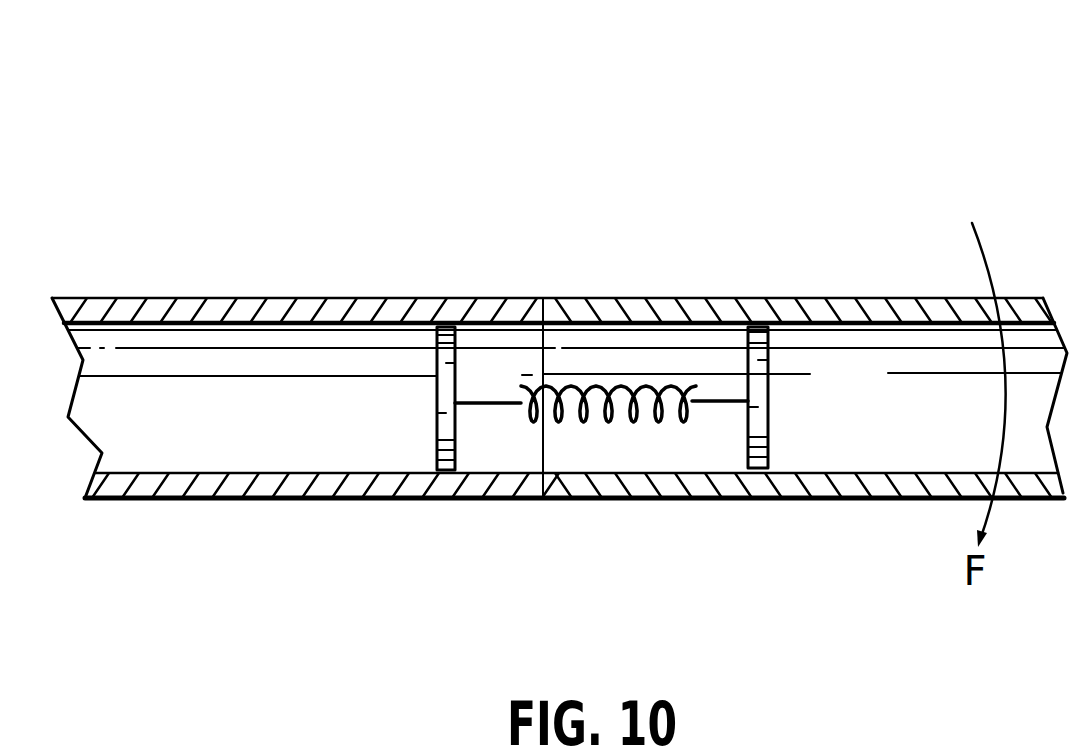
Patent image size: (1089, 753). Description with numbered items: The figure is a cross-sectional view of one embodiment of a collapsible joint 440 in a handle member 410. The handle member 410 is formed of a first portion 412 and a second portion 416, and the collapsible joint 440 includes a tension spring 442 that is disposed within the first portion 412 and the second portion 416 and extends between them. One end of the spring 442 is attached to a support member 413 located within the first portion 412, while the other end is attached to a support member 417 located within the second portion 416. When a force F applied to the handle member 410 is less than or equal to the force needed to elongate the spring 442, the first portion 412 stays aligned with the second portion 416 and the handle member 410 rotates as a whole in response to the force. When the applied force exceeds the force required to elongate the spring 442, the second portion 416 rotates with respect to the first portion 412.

The handle member 410 is at (567, 331).
The first portion 412 is at (277, 297).
The support member 413 is at (435, 383).
The second portion 416 is at (665, 502).
The support member 417 is at (770, 408).
The collapsible joint 440 is at (577, 297).
The tension spring 442 is at (628, 387).